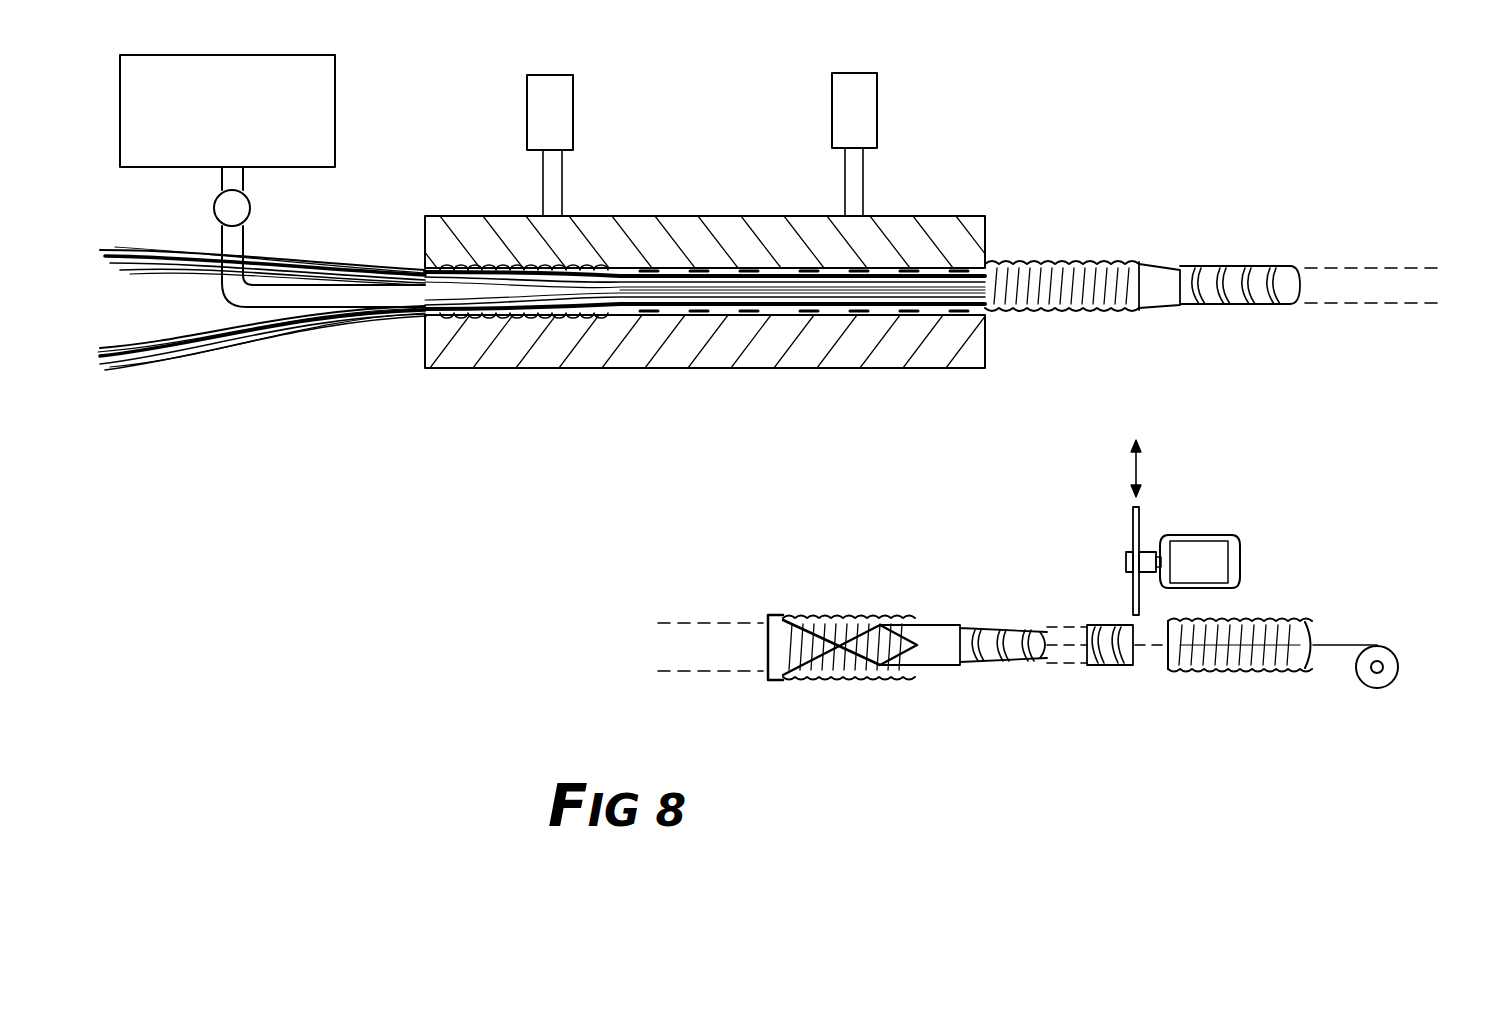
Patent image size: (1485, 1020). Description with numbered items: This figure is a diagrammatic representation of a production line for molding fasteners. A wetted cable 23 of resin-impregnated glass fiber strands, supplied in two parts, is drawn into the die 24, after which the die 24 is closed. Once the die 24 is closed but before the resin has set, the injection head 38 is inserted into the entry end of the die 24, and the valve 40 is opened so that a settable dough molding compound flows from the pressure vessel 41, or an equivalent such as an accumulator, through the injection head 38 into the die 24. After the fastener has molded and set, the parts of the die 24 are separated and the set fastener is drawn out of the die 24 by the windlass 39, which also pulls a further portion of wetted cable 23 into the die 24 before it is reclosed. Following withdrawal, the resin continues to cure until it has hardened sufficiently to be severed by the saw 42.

The pressure vessel 41 is at (210, 118).
The valve 40 is at (252, 203).
The injection head 38 is at (393, 293).
The wetted cable 23 is at (150, 263).
The die 24 is at (933, 192).
The saw 42 is at (1135, 548).
The windlass 39 is at (1373, 680).